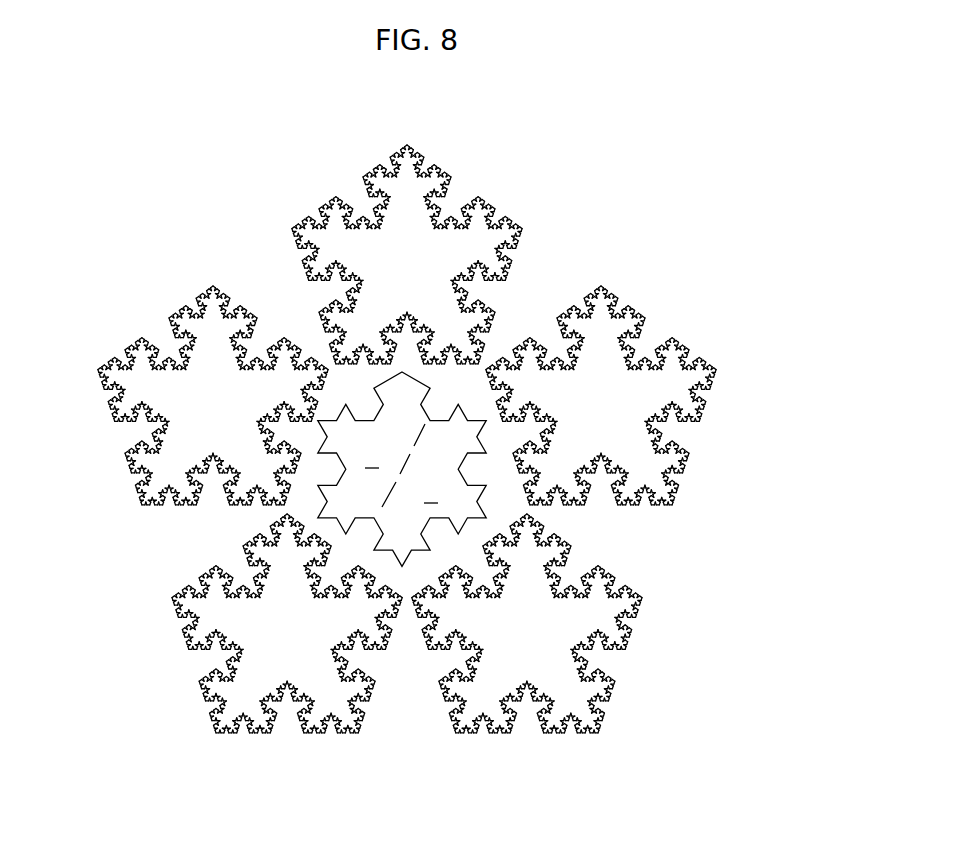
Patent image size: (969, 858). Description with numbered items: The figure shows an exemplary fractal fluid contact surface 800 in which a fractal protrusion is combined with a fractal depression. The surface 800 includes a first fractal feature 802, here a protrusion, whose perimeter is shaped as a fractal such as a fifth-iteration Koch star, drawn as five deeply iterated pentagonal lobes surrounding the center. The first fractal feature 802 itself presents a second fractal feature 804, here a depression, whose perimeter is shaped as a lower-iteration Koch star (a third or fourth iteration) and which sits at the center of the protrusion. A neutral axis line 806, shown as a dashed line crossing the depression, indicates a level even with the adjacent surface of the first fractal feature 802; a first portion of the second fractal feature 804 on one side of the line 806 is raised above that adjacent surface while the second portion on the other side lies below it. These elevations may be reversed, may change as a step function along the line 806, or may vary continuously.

The fractal fluid contact surface 800 is at (125, 173).
The first fractal feature 802 is at (603, 287).
The second fractal feature 804 is at (486, 518).
The neutral axis line 806 is at (415, 447).